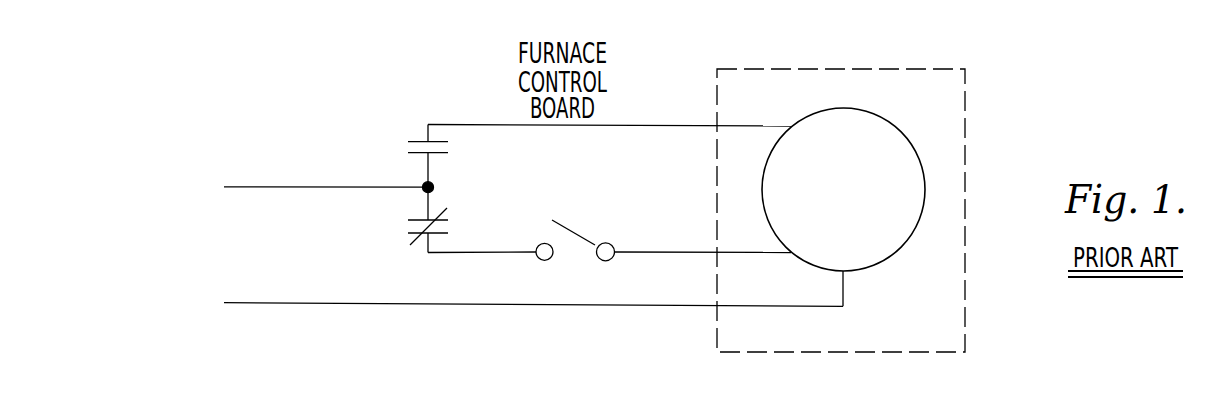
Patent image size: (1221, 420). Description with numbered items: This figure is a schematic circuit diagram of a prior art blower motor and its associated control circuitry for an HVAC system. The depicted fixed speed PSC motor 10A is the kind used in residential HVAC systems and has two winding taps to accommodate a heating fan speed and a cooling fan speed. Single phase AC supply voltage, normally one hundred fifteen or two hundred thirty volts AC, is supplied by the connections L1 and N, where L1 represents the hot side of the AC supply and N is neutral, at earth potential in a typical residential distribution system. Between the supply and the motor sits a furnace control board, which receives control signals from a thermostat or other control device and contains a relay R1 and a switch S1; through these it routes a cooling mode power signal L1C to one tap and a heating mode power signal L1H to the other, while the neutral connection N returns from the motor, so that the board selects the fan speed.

The fixed speed PSC motor 10A is at (869, 210).
The relay R1 is at (446, 189).
The switch S1 is at (521, 226).
The hot side connection of the AC supply L1 is at (329, 172).
The neutral connection N is at (533, 286).
The cooling mode power signal L1C is at (609, 142).
The heating mode power signal L1H is at (703, 239).